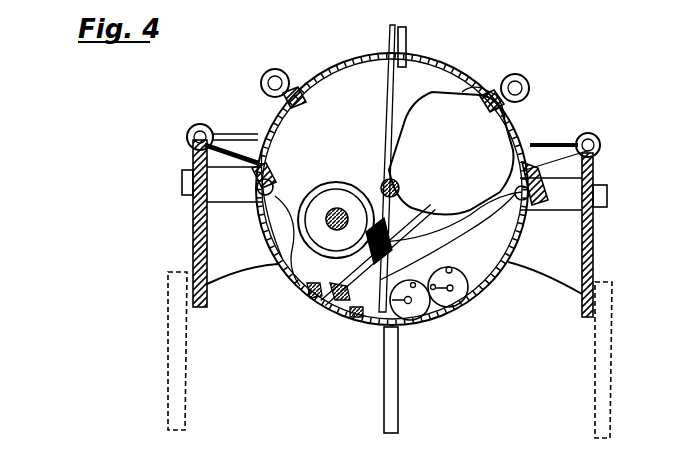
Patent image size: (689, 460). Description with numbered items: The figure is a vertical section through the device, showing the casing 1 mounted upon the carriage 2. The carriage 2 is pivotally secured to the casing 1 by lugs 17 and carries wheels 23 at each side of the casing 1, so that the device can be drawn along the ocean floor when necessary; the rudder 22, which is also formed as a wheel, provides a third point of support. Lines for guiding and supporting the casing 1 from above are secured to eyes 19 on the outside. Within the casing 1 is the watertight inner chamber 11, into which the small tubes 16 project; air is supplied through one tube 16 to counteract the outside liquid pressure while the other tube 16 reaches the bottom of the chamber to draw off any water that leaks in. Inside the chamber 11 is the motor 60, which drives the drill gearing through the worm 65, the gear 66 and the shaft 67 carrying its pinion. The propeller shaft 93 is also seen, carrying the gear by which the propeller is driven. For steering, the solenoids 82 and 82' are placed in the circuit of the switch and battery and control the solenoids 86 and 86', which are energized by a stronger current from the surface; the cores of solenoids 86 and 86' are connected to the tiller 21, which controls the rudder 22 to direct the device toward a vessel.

The casing 1 is at (473, 78).
The carriage 2 is at (192, 226).
The inner chamber 11 is at (391, 196).
The small tubes 16 is at (392, 31).
The lugs 17 is at (189, 182).
The eyes 19 is at (284, 72).
The tiller 21 is at (545, 146).
The rudder 22 is at (396, 386).
The wheels 23 is at (170, 336).
The motor 60 is at (451, 150).
The worm 65 is at (390, 250).
The gear 66 is at (337, 184).
The shaft 67 is at (333, 228).
The solenoid 82 is at (492, 180).
The solenoid 82' is at (273, 166).
The solenoid 86 is at (584, 130).
The solenoid 86' is at (222, 130).
The shaft 93 is at (394, 180).